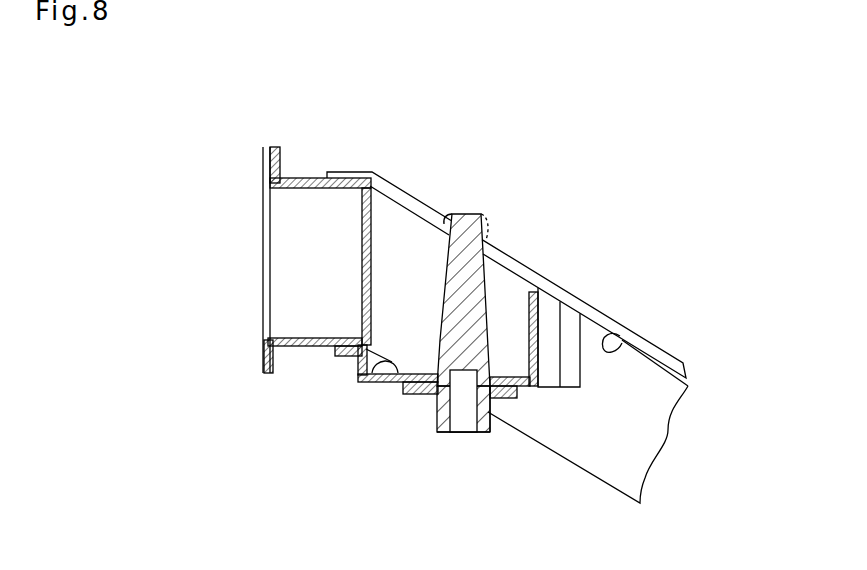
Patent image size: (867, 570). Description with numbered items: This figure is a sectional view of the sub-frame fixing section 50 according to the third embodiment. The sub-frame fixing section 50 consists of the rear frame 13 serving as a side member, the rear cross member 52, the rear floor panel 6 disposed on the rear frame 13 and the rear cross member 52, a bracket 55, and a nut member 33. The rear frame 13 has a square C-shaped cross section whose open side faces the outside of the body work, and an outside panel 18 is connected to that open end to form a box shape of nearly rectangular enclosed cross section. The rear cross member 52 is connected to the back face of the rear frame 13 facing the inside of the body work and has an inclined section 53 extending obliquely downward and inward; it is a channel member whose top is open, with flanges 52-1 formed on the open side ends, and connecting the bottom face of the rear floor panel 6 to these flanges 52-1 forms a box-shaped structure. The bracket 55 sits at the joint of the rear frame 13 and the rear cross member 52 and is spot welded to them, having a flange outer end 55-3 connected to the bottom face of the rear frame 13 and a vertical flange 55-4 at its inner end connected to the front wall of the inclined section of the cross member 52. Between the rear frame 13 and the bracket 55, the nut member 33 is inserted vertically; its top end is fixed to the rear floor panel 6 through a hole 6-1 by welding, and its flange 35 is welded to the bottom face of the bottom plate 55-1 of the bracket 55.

The sub-frame fixing section 50 is at (236, 189).
The rear frame 13 is at (298, 174).
The outside panel 18 is at (260, 270).
The rear floor panel 6 is at (418, 204).
The hole 6-1 is at (476, 214).
The bracket 55 is at (357, 384).
The bottom plate 55-1 is at (400, 394).
The flange outer end 55-3 is at (349, 360).
The vertical flange 55-4 is at (572, 332).
The rear cross member 52 is at (672, 436).
The flange 52-1 is at (620, 336).
The inclined section 53 is at (630, 402).
The nut member 33 is at (437, 434).
The flange 35 is at (497, 396).